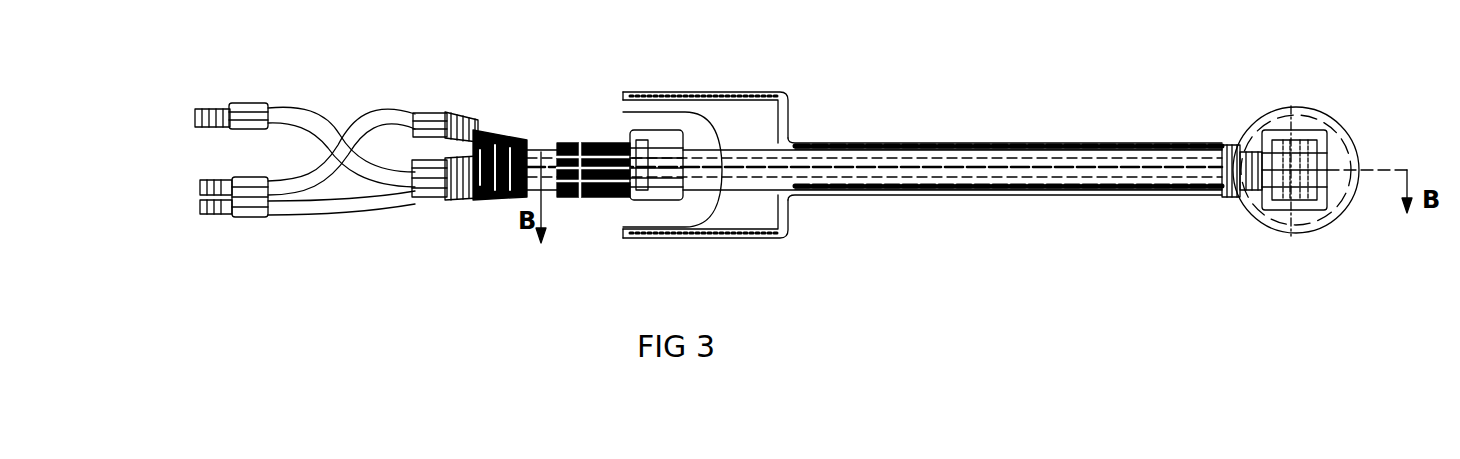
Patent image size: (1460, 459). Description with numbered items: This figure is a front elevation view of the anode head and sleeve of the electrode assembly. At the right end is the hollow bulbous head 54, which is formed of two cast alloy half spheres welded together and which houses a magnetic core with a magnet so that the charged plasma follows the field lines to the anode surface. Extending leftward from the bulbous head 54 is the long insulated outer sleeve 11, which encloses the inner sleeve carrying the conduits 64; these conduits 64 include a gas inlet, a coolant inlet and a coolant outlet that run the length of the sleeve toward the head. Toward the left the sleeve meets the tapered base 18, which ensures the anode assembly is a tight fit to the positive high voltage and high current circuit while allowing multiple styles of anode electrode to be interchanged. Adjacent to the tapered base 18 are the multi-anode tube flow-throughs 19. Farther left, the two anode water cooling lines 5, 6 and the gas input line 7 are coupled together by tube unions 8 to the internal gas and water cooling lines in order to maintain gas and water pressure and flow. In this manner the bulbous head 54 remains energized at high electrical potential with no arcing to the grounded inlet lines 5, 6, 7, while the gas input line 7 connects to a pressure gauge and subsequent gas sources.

The anode water cooling line 5 is at (200, 188).
The anode water cooling line 6 is at (200, 208).
The gas input line 7 is at (195, 121).
The tube union 8 is at (258, 219).
The insulated outer sleeve 11 is at (963, 141).
The tapered base 18 is at (655, 200).
The multi-anode tube flow-through 19 is at (588, 200).
The hollow bulbous head 54 is at (1312, 108).
The conduits 64 is at (1143, 139).